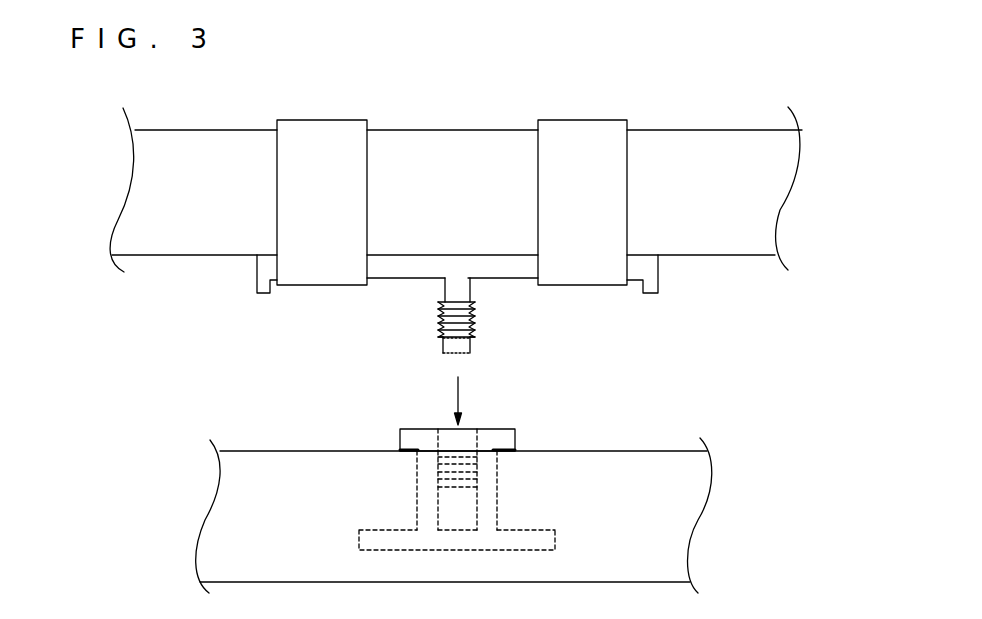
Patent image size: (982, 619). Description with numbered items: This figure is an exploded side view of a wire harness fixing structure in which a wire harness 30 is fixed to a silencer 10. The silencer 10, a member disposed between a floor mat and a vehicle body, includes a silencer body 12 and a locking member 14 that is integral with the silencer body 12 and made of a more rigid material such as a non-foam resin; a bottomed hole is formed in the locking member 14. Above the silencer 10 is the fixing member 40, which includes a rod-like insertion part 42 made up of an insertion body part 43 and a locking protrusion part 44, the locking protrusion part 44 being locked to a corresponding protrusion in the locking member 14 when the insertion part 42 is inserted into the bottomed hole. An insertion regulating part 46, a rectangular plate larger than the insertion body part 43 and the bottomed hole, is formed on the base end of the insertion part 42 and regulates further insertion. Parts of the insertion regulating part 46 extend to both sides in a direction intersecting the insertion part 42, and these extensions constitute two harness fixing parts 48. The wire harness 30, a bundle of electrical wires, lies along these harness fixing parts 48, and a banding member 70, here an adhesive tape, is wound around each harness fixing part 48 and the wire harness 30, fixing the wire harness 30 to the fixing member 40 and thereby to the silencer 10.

The silencer 10 is at (454, 490).
The silencer body 12 is at (567, 463).
The locking member 14 is at (518, 433).
The wire harness 30 is at (163, 247).
The fixing member 40 is at (474, 327).
The insertion part 42 is at (508, 333).
The insertion body part 43 is at (463, 347).
The locking protrusion part 44 is at (478, 315).
The insertion regulating part 46 is at (442, 270).
The harness fixing part 48 is at (382, 270).
The banding member 70 is at (322, 132).